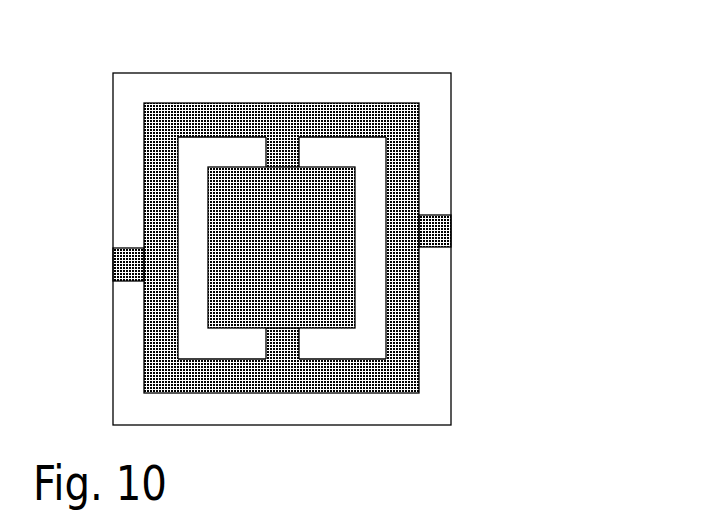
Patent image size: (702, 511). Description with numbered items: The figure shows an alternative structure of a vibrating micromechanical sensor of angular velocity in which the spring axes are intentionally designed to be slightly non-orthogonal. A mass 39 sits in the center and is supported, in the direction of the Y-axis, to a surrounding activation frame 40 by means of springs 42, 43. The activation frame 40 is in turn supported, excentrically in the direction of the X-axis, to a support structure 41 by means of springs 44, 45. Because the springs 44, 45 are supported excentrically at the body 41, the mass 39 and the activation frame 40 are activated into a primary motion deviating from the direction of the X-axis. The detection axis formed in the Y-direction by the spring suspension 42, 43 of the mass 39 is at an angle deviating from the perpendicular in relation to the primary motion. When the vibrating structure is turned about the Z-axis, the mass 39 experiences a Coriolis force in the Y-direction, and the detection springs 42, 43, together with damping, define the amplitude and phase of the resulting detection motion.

The mass 39 is at (355, 200).
The activation frame 40 is at (424, 131).
The support structure 41 is at (418, 73).
The spring 42 is at (298, 148).
The spring 43 is at (299, 345).
The spring 44 is at (132, 247).
The spring 45 is at (443, 216).